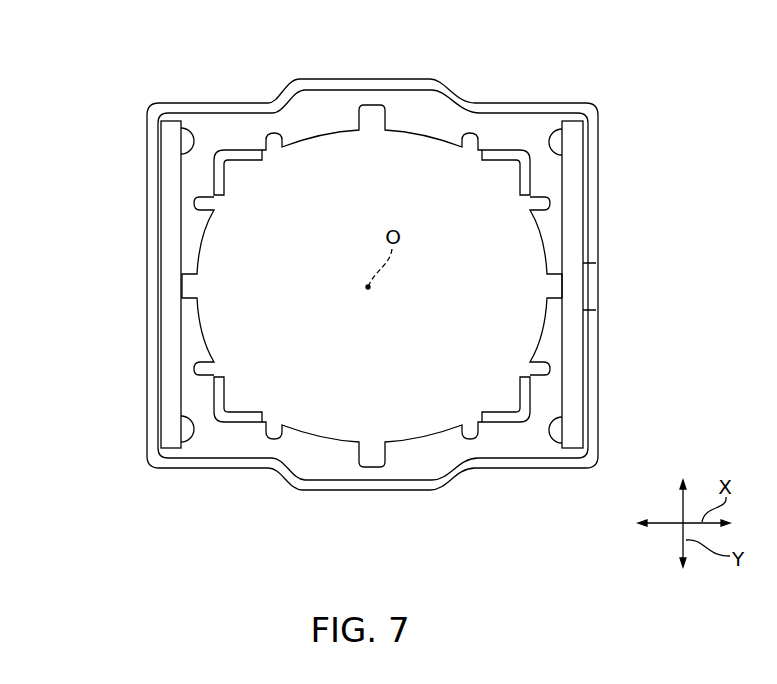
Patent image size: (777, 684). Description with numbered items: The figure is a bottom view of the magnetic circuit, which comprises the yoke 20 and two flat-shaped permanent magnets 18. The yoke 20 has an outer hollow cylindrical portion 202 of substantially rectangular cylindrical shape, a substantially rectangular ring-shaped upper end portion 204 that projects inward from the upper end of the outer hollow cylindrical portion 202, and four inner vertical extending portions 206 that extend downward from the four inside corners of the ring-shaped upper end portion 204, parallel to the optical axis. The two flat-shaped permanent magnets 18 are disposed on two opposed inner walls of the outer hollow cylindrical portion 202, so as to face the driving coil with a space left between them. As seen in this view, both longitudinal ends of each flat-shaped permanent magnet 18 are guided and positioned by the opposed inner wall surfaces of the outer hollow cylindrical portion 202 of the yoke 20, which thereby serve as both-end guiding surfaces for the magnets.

The flat-shaped permanent magnet 18 is at (170, 282).
The yoke 20 is at (372, 287).
The outer hollow cylindrical portion 202 is at (240, 103).
The ring-shaped upper end portion 204 is at (292, 453).
The inner vertical extending portion 206 is at (230, 148).